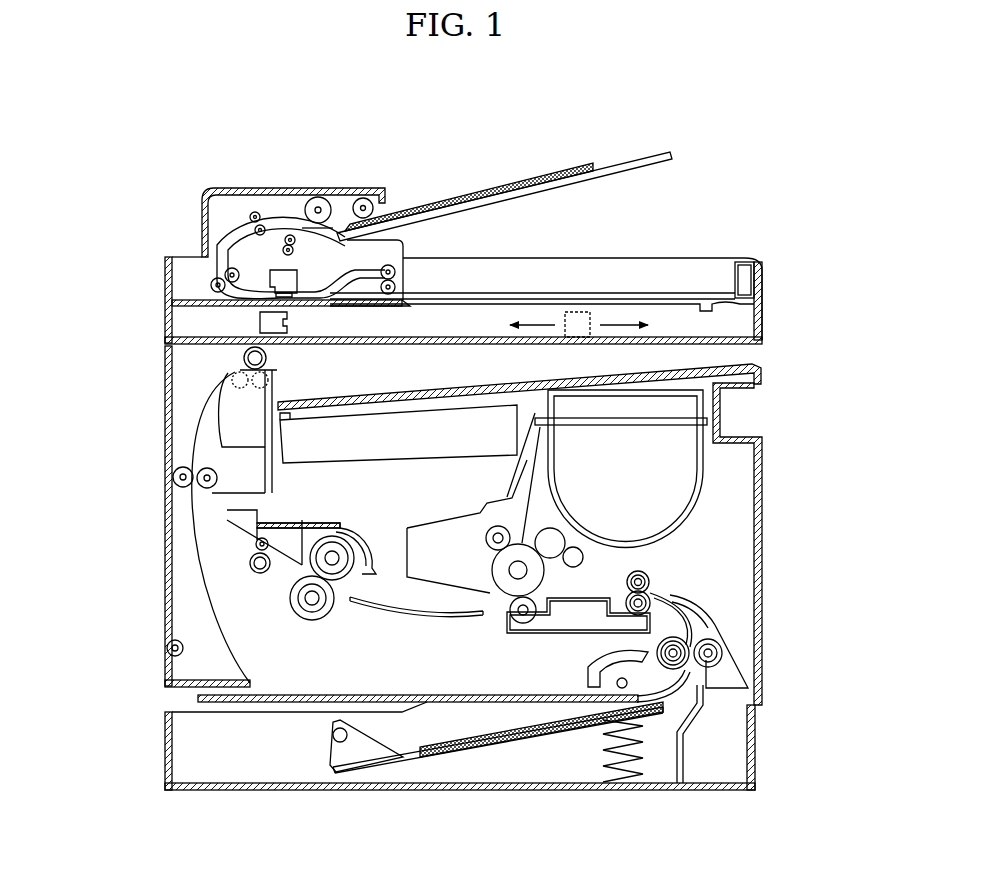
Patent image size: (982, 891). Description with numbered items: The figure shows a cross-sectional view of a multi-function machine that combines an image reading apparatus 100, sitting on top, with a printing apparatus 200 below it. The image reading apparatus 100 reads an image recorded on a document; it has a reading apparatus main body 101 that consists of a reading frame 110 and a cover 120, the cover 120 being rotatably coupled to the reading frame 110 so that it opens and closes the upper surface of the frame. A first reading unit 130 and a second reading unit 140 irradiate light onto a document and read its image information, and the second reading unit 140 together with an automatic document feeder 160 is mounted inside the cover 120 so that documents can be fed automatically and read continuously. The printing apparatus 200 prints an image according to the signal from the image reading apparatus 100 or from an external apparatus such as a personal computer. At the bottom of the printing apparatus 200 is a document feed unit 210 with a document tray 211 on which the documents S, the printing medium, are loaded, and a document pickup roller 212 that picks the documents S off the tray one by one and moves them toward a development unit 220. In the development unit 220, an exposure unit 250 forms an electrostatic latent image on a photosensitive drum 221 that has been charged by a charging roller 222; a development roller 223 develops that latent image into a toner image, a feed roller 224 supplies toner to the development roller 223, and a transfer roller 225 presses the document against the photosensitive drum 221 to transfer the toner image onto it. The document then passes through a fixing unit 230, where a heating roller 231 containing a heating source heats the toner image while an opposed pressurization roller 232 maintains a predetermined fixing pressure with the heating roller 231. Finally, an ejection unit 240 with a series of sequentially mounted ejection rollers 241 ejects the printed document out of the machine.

The image reading apparatus 100 is at (769, 236).
The reading apparatus main body 101 is at (84, 238).
The reading frame 110 is at (166, 306).
The cover 120 is at (202, 215).
The first reading unit 130 is at (289, 322).
The second reading unit 140 is at (282, 268).
The automatic document feeder 160 is at (344, 199).
The printing apparatus 200 is at (769, 410).
The document feed unit 210 is at (556, 742).
The document tray 211 is at (462, 760).
The document pickup roller 212 is at (590, 670).
The development unit 220 is at (711, 515).
The photosensitive drum 221 is at (492, 568).
The charging roller 222 is at (486, 526).
The development roller 223 is at (548, 522).
The feed roller 224 is at (585, 556).
The transfer roller 225 is at (508, 613).
The fixing unit 230 is at (360, 594).
The heating roller 231 is at (333, 535).
The pressurization roller 232 is at (315, 615).
The ejection unit 240 is at (183, 500).
The ejection rollers 241 is at (268, 360).
The exposure unit 250 is at (393, 450).
The document S is at (468, 730).